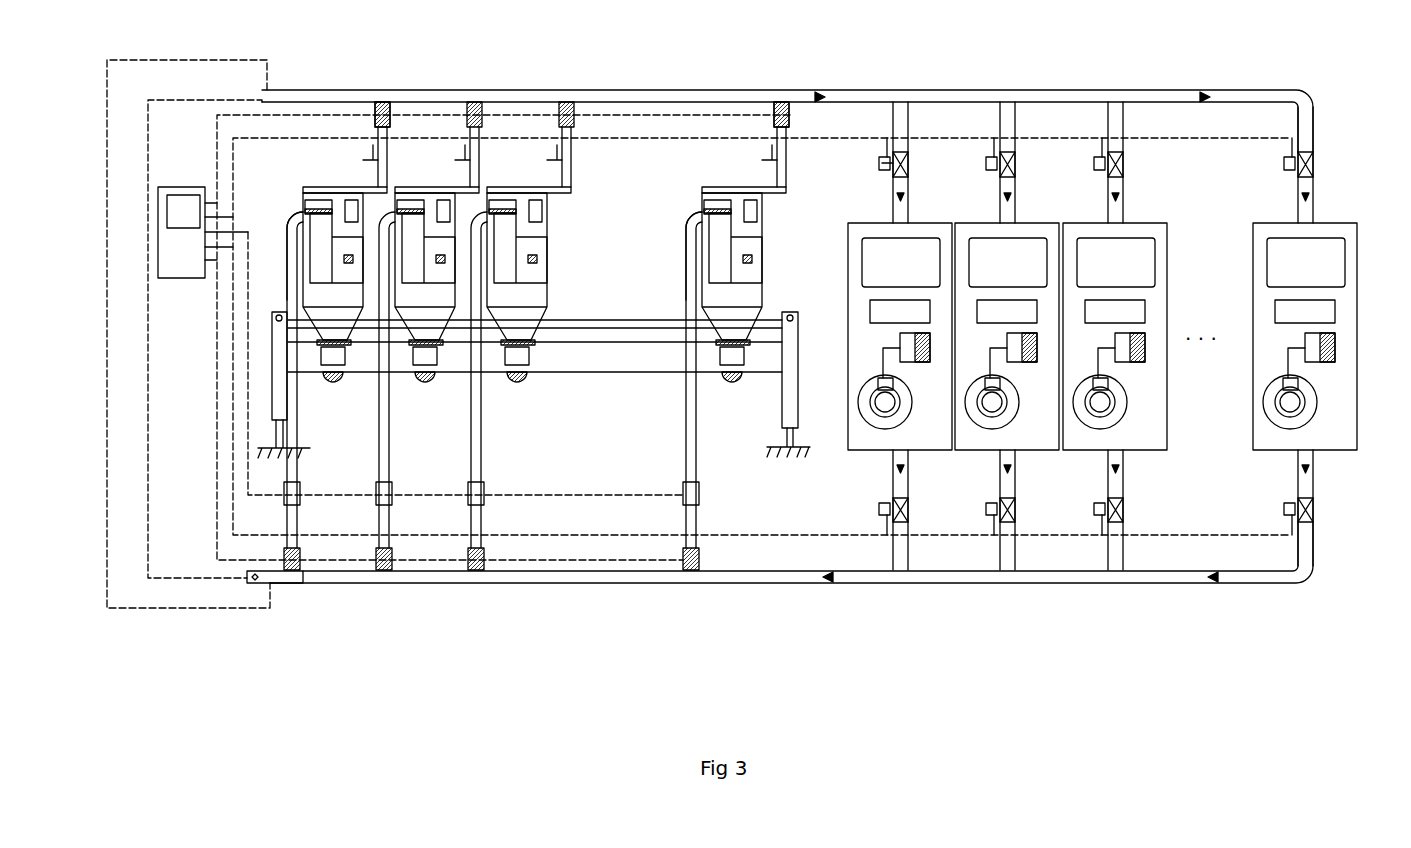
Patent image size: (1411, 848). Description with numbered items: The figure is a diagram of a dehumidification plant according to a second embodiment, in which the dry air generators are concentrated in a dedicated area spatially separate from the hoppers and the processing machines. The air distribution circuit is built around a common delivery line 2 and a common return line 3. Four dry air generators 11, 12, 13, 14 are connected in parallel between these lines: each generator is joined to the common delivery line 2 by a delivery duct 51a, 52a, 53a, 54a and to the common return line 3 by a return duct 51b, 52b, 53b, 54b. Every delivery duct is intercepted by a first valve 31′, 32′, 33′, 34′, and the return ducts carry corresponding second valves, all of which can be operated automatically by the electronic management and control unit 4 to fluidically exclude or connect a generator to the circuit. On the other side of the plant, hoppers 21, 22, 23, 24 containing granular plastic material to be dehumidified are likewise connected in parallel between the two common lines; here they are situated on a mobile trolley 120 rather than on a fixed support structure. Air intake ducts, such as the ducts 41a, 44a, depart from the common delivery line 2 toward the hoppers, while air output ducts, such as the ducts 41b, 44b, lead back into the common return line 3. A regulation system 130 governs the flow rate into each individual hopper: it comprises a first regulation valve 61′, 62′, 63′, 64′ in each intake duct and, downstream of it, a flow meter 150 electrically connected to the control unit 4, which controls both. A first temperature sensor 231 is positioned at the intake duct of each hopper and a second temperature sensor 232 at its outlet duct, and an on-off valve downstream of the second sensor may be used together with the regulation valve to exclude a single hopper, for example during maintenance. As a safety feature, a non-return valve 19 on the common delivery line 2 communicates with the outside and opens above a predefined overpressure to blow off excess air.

The common supply line 2 is at (1190, 585).
The common return line 3 is at (1233, 90).
The electronic management and control unit 4 is at (697, 334).
The dry air generator 11 is at (942, 443).
The dry air generator 12 is at (1049, 443).
The dry air generator 13 is at (1157, 443).
The dry air generator 14 is at (1347, 443).
The non-return valve 19 is at (245, 583).
The hopper 21 is at (333, 187).
The hopper 22 is at (442, 187).
The hopper 23 is at (602, 266).
The hopper 24 is at (763, 262).
The first valve 31′ is at (908, 150).
The first valve 32′ is at (1017, 150).
The first valve 33′ is at (1125, 150).
The first valve 34′ is at (1315, 160).
The air intake duct 41a is at (286, 300).
The air output duct 41b is at (390, 137).
The air intake duct 44a is at (685, 462).
The air output duct 44b is at (786, 165).
The delivery duct 51a is at (893, 548).
The return duct 51b is at (910, 180).
The delivery duct 52a is at (1000, 548).
The return duct 52b is at (1017, 180).
The delivery duct 53a is at (1108, 548).
The return duct 53b is at (1125, 180).
The delivery duct 54a is at (1298, 548).
The return duct 54b is at (1318, 183).
The first regulation valve 61′ is at (298, 585).
The first regulation valve 62′ is at (384, 585).
The first regulation valve 63′ is at (477, 585).
The first regulation valve 64′ is at (697, 585).
The mobile trolley 120 is at (571, 373).
The regulation system 130 is at (304, 510).
The flow meter 150 is at (300, 493).
The first temperature sensor 231 is at (303, 205).
The second temperature sensor 232 is at (375, 152).